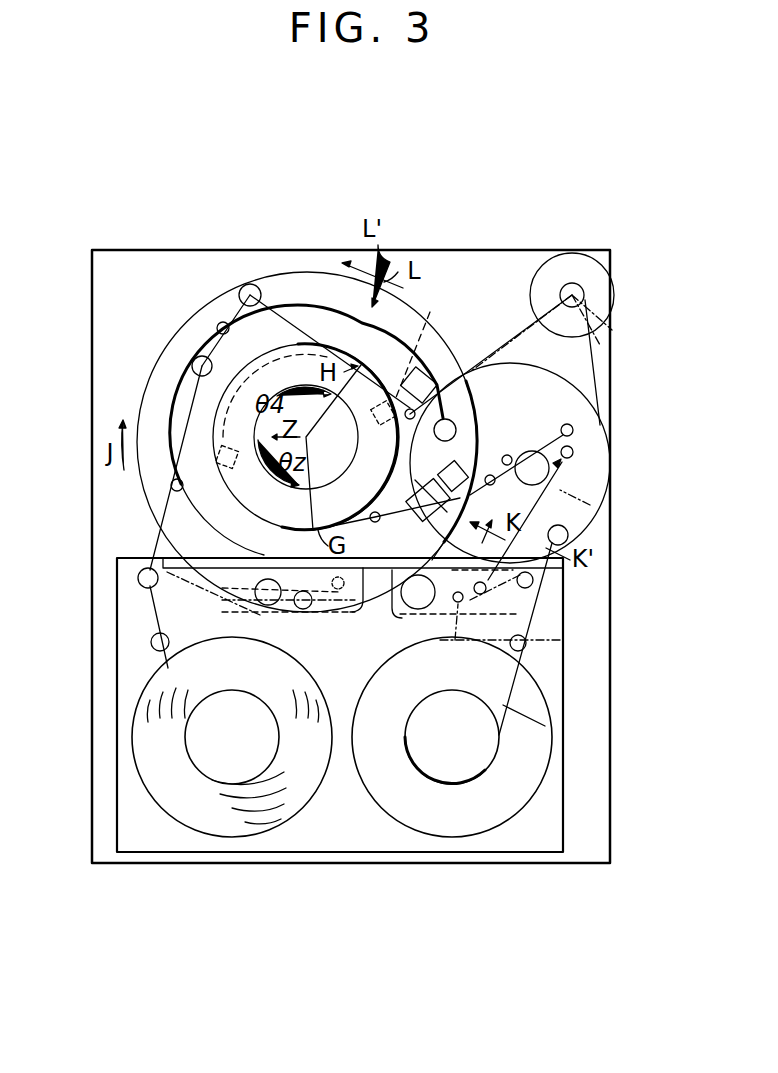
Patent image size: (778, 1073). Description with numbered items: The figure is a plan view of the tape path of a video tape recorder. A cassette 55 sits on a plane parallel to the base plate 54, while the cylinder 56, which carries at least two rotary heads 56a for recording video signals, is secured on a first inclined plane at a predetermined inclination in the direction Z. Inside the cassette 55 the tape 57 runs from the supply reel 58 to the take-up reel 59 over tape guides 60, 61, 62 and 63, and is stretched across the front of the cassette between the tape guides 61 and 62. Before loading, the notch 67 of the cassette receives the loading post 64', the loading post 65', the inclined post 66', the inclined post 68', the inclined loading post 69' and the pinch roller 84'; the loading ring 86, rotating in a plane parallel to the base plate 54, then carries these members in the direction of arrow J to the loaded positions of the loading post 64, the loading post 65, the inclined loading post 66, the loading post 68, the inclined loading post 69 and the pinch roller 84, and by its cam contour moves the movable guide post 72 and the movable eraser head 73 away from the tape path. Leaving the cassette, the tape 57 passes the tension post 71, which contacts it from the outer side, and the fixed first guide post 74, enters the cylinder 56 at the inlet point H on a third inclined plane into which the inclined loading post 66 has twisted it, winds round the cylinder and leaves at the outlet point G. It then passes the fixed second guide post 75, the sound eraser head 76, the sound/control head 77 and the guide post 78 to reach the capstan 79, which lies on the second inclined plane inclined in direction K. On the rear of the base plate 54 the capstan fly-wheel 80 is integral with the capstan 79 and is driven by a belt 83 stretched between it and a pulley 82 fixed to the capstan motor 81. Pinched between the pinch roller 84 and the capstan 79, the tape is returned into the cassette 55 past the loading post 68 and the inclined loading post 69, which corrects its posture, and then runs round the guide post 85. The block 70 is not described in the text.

The base plate 54 is at (602, 770).
The cassette 55 is at (518, 850).
The cylinder 56 is at (306, 437).
The rotary heads 56a is at (350, 361).
The tape 57 is at (545, 726).
The supply reel 58 is at (262, 752).
The take-up reel 59 is at (453, 772).
The tape guide 60 is at (151, 642).
The tape guide 61 is at (142, 570).
The tape guide 62 is at (533, 580).
The tape guide 63 is at (526, 645).
The loading post 64 is at (473, 420).
The loading post 64' is at (220, 599).
The loading post 65 is at (304, 331).
The loading post 65' is at (251, 615).
The inclined loading post 66 is at (192, 309).
The inclined post 66' is at (295, 560).
The notch 67 is at (265, 612).
The loading post 68 is at (552, 415).
The inclined post 68' is at (540, 609).
The inclined loading post 69 is at (608, 379).
The inclined loading post 69' is at (503, 633).
The loading block 70 is at (476, 621).
The tension post 71 is at (170, 486).
The movable guide post 72 is at (193, 364).
The movable eraser head 73 is at (426, 372).
The fixed first guide post 74 is at (450, 410).
The fixed second guide post 75 is at (370, 513).
The sound eraser head 76 is at (418, 485).
The sound/control head 77 is at (492, 485).
The guide post 78 is at (590, 505).
The capstan 79 is at (506, 455).
The capstan fly-wheel 80 is at (546, 376).
The capstan motor 81 is at (572, 280).
The pulley 82 is at (582, 280).
The belt 83 is at (612, 322).
The pinch roller 84 is at (571, 515).
The pinch roller 84' is at (393, 611).
The guide post 85 is at (568, 537).
The loading ring 86 is at (146, 393).